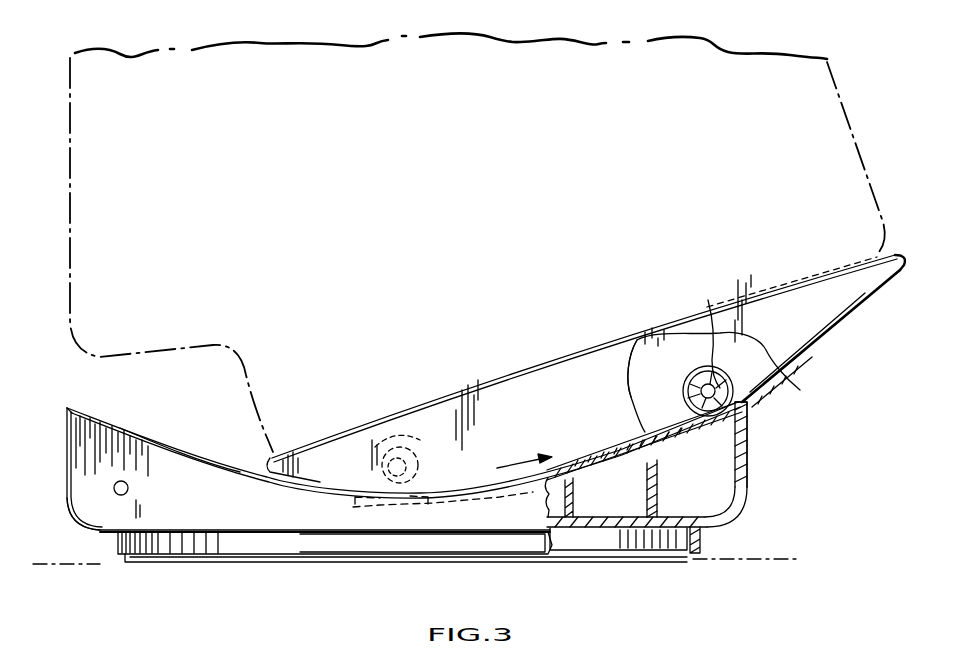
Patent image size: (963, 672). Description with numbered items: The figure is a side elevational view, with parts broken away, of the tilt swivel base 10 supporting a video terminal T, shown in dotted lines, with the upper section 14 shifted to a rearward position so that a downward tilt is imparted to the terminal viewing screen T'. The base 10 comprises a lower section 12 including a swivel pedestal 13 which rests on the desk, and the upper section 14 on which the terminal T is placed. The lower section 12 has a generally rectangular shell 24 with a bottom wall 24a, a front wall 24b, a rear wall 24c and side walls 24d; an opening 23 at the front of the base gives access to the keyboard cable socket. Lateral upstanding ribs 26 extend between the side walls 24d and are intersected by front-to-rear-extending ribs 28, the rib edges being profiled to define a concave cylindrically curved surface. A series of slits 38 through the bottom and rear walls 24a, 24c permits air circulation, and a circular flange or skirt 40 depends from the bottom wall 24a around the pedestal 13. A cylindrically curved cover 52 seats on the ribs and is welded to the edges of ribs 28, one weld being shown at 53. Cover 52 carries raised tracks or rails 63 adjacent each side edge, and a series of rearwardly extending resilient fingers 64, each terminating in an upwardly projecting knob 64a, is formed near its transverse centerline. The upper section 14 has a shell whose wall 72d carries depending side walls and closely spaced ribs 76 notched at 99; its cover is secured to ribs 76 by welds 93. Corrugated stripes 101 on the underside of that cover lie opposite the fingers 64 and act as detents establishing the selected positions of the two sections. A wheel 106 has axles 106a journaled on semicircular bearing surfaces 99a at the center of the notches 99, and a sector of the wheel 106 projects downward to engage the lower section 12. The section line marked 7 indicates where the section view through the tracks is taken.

The tilt swivel base 10 is at (764, 490).
The lower section 12 is at (67, 462).
The swivel pedestal 13 is at (620, 574).
The upper section 14 is at (268, 460).
The opening 23 is at (128, 488).
The shell 24 is at (701, 528).
The bottom wall 24a is at (108, 533).
The front wall 24b is at (67, 505).
The rear wall 24c is at (748, 461).
The side walls 24d is at (150, 457).
The lateral upstanding ribs 26 is at (720, 457).
The front-to-rear-extending ribs 28 is at (640, 495).
The slits 38 is at (741, 509).
The circular flange or skirt 40 is at (231, 547).
The cover 52 is at (593, 461).
The weld 53 is at (676, 450).
The raised tracks or rails 63 is at (95, 410).
The resilient fingers 64 is at (352, 508).
The knob 64a is at (430, 483).
The upper wall 72d is at (534, 382).
The ribs 76 is at (641, 370).
The welds 93 is at (780, 375).
The notches 99 is at (682, 426).
The bearing surfaces 99a is at (704, 388).
The corrugated stripes 101 is at (430, 483).
The wheel 106 is at (384, 425).
The axles 106a is at (709, 304).
The section line 7- 7 is at (412, 372).
The video terminal T is at (477, 242).
The viewing screen T' is at (55, 134).